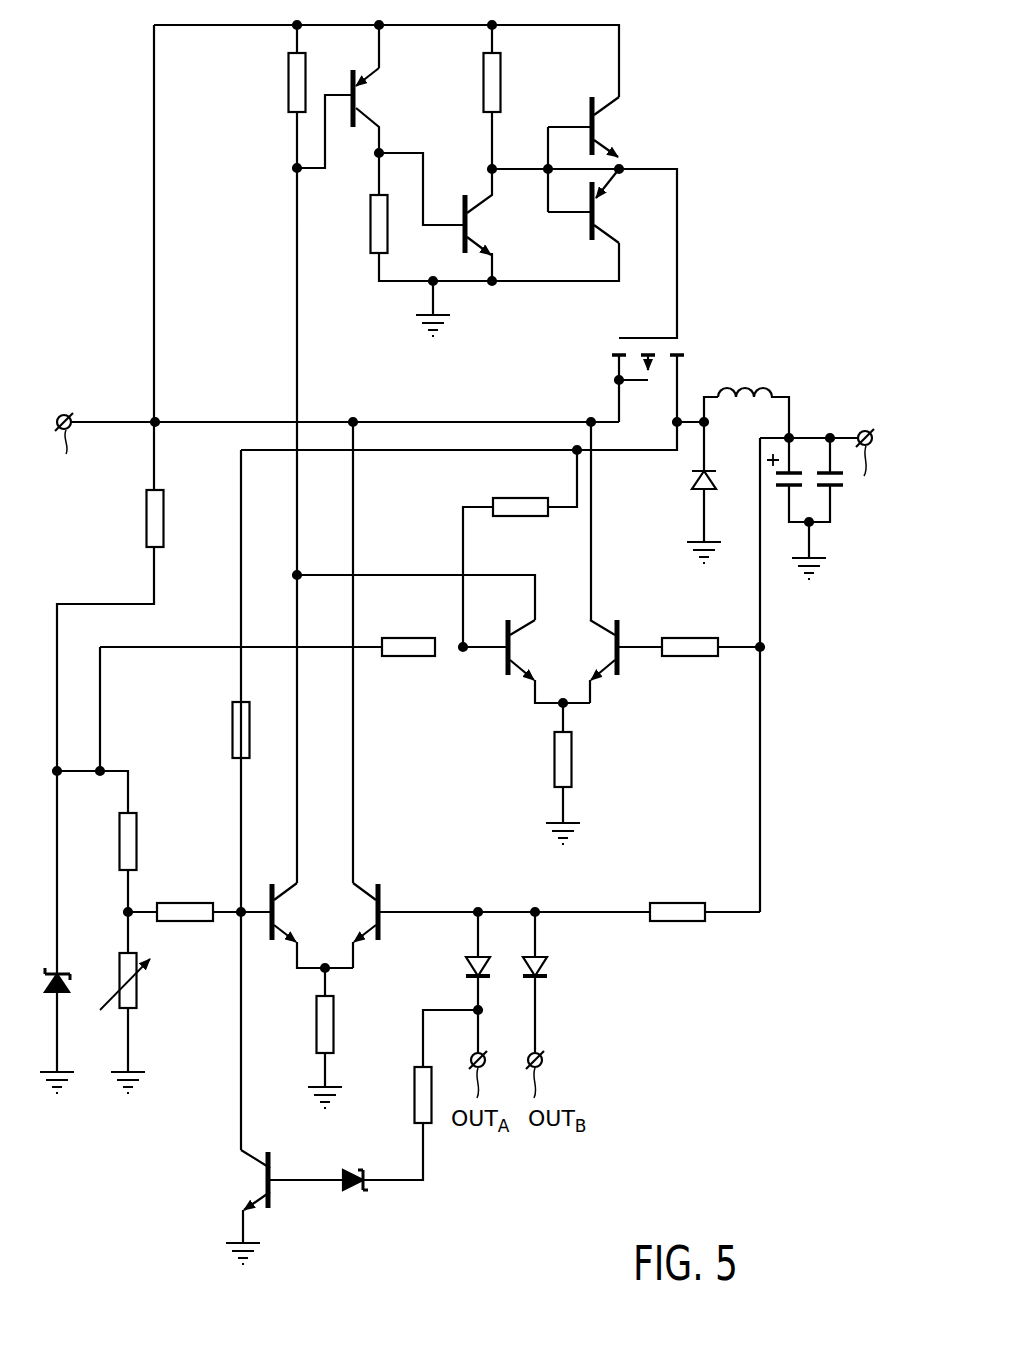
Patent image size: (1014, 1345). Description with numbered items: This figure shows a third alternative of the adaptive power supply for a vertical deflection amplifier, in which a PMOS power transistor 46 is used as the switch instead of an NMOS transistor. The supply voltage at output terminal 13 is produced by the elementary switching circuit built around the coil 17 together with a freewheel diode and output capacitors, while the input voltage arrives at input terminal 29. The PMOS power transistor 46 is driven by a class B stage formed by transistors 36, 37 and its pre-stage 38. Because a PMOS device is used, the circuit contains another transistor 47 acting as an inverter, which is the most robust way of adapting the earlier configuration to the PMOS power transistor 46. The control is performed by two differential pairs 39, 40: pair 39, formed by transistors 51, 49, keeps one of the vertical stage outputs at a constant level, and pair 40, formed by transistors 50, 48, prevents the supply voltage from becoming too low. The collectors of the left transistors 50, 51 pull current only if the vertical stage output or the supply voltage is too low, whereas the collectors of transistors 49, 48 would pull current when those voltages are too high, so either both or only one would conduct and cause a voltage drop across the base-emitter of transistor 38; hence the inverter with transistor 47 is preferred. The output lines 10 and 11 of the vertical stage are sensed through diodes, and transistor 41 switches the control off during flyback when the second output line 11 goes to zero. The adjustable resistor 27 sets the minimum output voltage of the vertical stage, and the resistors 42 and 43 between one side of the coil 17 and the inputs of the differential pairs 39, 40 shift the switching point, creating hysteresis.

The line 10 is at (474, 994).
The line 11 is at (540, 1012).
The output terminal Vp 13 is at (863, 431).
The coil 17 is at (752, 385).
The adjustable resistor 27 is at (138, 998).
The input terminal Vinput 29 is at (66, 414).
The transistor 36 is at (612, 121).
The transistor 37 is at (606, 215).
The pre-stage 38 is at (370, 92).
The differential pair 39 is at (516, 945).
The differential pair 40 is at (599, 723).
The transistor 41 is at (250, 1187).
The resistor 42 is at (232, 735).
The resistor 43 is at (520, 498).
The PMOS power transistor 46 is at (698, 347).
The transistor 47 is at (487, 229).
The transistor 48 is at (622, 625).
The transistor 49 is at (385, 897).
The transistor 50 is at (500, 664).
The transistor 51 is at (282, 910).